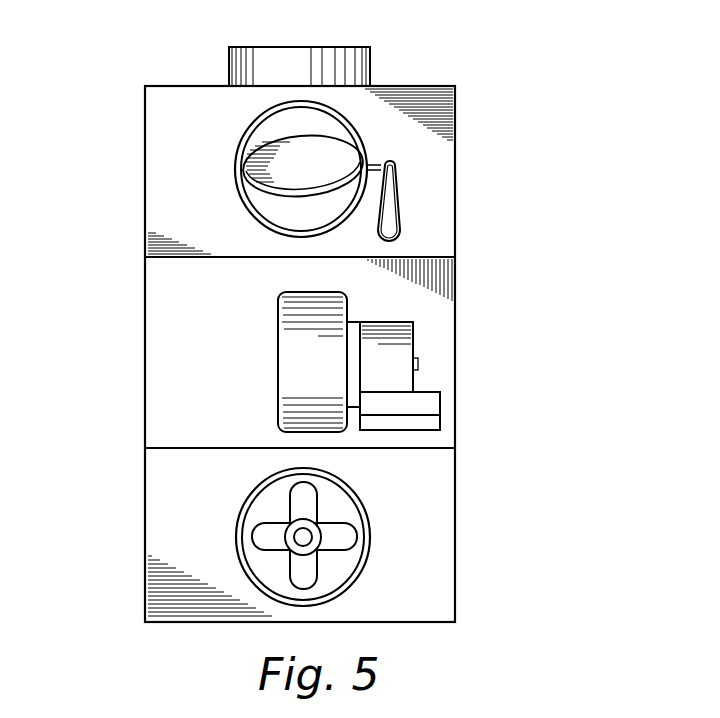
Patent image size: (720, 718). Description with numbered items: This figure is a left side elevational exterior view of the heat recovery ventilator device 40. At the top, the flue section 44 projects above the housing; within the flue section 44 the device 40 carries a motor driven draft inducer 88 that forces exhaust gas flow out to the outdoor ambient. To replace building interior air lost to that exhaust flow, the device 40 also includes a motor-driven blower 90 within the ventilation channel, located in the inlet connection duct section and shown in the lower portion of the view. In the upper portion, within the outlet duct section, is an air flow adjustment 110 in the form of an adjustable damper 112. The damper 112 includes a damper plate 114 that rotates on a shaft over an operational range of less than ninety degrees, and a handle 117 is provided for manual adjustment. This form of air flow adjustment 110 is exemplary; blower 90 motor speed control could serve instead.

The heat recovery ventilator device 40 is at (615, 187).
The flue section 44 is at (371, 64).
The motor driven draft inducer 88 is at (315, 365).
The motor-driven blower 90 is at (320, 505).
The air flow adjustment 110 is at (193, 218).
The adjustable damper 112 is at (390, 124).
The damper plate 114 is at (338, 159).
The handle 117 is at (402, 210).